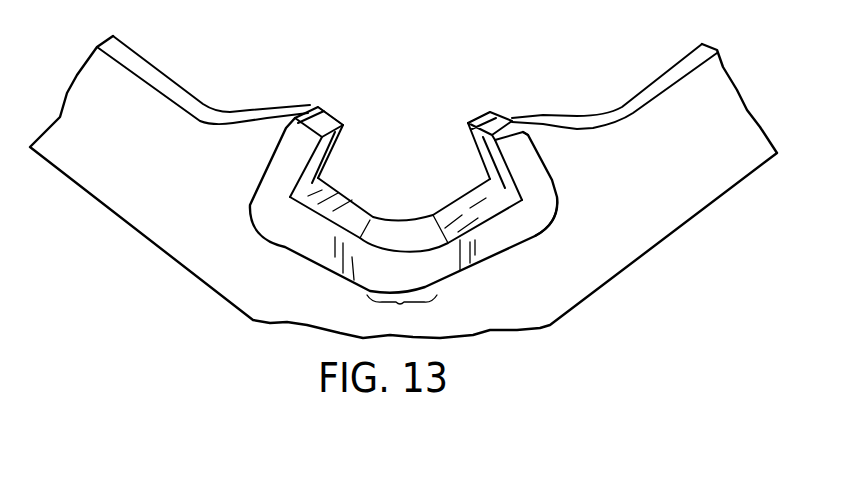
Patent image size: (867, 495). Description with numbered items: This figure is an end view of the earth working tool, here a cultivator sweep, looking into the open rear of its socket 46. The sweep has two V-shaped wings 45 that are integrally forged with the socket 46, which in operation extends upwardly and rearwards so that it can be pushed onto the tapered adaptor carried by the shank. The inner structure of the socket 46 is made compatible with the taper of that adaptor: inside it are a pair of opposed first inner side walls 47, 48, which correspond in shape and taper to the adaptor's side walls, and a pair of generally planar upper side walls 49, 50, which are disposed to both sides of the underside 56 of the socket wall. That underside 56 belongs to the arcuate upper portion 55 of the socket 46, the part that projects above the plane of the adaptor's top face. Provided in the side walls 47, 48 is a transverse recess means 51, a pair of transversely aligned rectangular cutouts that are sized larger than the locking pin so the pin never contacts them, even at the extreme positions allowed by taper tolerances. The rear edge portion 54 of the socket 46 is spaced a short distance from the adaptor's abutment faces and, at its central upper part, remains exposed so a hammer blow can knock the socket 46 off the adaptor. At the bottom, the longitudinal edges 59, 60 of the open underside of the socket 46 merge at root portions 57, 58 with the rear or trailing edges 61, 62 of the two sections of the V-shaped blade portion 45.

The V-shaped wings 45 is at (123, 144).
The socket 46 is at (247, 222).
The first inner side wall 47 is at (328, 150).
The first inner side wall 48 is at (483, 158).
The upper side wall 49 is at (355, 219).
The upper side wall 50 is at (458, 213).
The transverse recess means 51 is at (310, 108).
The rear edge portion 54 is at (521, 222).
The arcuate upper portion 55 is at (402, 315).
The underside 56 is at (403, 225).
The root portion 57 is at (205, 112).
The root portion 58 is at (612, 115).
The longitudinal edge 59 is at (328, 115).
The longitudinal edge 60 is at (482, 118).
The trailing edge 61 is at (145, 72).
The trailing edge 62 is at (685, 65).